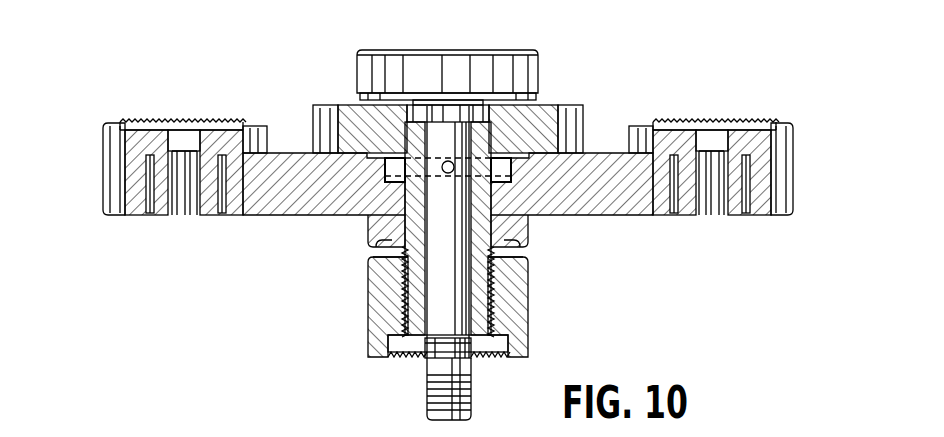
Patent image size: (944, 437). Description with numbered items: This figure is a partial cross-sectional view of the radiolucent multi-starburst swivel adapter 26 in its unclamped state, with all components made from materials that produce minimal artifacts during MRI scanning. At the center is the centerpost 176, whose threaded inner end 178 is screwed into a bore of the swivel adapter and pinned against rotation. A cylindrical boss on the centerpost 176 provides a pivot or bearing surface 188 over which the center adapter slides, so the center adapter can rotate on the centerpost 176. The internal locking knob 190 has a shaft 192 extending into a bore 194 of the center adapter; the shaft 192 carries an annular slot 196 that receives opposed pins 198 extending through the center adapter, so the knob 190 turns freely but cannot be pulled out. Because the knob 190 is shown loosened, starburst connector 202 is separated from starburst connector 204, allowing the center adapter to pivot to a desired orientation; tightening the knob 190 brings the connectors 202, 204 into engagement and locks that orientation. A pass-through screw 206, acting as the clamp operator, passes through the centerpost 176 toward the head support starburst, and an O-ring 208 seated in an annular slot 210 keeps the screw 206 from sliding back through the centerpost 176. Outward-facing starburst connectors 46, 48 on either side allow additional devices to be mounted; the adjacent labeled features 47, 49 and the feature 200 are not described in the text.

The multi-starburst swivel adapter 26 is at (654, 52).
The starburst connector 46 is at (103, 142).
The left knurled ring 47 is at (222, 122).
The starburst connector 48 is at (793, 144).
The right knurled ring 49 is at (760, 122).
The centerpost 176 is at (492, 296).
The threaded inner end 178 is at (410, 305).
The pivot or bearing surface 188 is at (405, 200).
The internal locking knob 190 is at (566, 107).
The shaft 192 is at (472, 410).
The bore 194 is at (385, 172).
The annular slot 196 is at (511, 170).
The opposed pins 198 is at (520, 245).
The left hub block 200 is at (400, 130).
The starburst connector 202 is at (378, 245).
The starburst connector 204 is at (398, 260).
The pass-through screw 206 is at (513, 50).
The O-ring 208 is at (468, 355).
The annular slot 210 is at (428, 355).